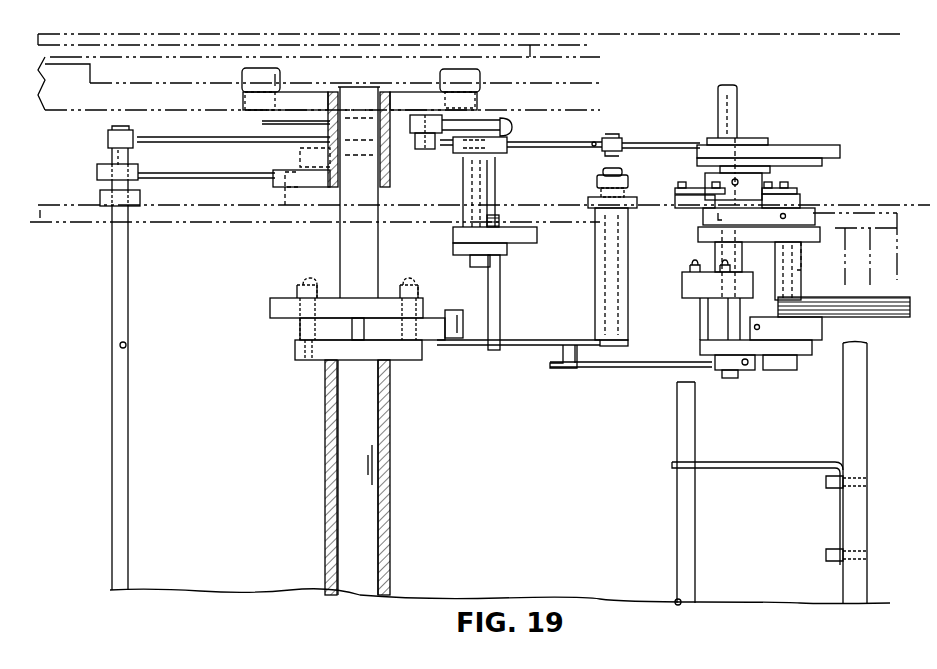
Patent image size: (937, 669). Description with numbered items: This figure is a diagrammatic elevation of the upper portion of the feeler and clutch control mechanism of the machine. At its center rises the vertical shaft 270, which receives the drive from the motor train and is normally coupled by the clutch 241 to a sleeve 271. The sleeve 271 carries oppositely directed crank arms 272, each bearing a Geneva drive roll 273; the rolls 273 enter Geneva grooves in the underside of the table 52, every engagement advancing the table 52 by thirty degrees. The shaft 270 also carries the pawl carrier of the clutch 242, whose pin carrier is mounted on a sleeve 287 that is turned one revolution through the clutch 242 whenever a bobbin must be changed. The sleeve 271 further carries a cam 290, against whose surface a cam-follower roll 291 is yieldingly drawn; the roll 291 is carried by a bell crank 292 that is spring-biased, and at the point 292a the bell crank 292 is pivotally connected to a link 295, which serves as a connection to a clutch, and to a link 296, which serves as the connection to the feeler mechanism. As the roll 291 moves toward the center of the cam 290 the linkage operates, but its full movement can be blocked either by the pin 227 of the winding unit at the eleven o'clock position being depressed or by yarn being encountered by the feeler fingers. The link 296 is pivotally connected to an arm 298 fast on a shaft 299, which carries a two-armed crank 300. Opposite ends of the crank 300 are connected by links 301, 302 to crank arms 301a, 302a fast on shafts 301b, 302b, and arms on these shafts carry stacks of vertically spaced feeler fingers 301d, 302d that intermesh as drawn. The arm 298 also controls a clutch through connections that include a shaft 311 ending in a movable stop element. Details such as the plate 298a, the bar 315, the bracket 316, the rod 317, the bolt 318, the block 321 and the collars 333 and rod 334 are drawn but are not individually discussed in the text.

The table 52 is at (538, 60).
The pin 227 is at (737, 105).
The clutch 241 is at (296, 158).
The clutch 242 is at (279, 304).
The vertical shaft 270 is at (372, 275).
The sleeve 271 is at (340, 90).
The crank arm 272 is at (300, 96).
The Geneva drive roll 273 is at (243, 78).
The sleeve 287 is at (390, 387).
The cam 290 is at (262, 122).
The cam-follower roll 291 is at (442, 121).
The bell crank 292 is at (546, 150).
The pivotal connection 292a is at (612, 138).
The link 295 is at (592, 140).
The link 296 is at (650, 143).
The arm 298 is at (703, 145).
The lower plate 298a is at (840, 145).
The shaft 299 is at (742, 140).
The two armed crank 300 is at (675, 200).
The link 301 is at (790, 188).
The crank arm 301a is at (800, 198).
The shaft 301b is at (785, 278).
The feeler fingers 301d is at (890, 310).
The link 302 is at (700, 188).
The crank arm 302a is at (705, 212).
The shaft 302b is at (715, 250).
The feeler fingers 302d is at (795, 300).
The shaft 311 is at (112, 148).
The bar 315 is at (646, 368).
The bracket 316 is at (560, 372).
The rod 317 is at (512, 345).
The bolt 318 is at (620, 298).
The block 321 is at (452, 310).
The collar 333 is at (100, 184).
The rod 334 is at (195, 172).